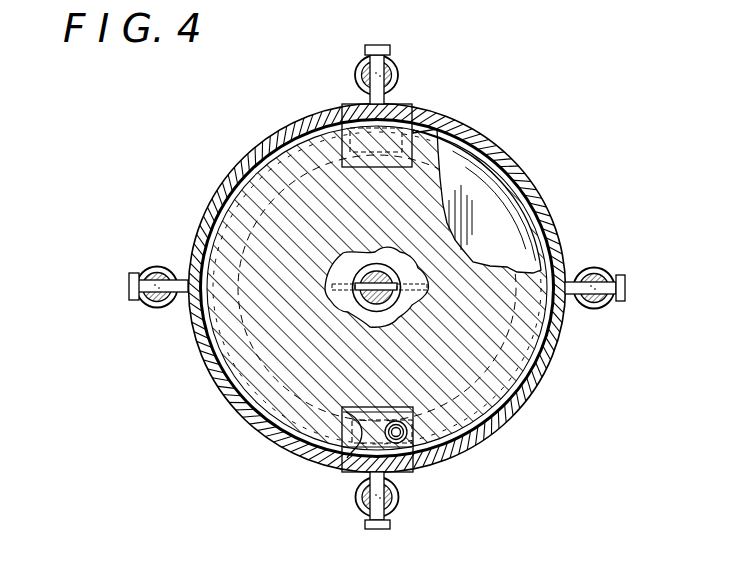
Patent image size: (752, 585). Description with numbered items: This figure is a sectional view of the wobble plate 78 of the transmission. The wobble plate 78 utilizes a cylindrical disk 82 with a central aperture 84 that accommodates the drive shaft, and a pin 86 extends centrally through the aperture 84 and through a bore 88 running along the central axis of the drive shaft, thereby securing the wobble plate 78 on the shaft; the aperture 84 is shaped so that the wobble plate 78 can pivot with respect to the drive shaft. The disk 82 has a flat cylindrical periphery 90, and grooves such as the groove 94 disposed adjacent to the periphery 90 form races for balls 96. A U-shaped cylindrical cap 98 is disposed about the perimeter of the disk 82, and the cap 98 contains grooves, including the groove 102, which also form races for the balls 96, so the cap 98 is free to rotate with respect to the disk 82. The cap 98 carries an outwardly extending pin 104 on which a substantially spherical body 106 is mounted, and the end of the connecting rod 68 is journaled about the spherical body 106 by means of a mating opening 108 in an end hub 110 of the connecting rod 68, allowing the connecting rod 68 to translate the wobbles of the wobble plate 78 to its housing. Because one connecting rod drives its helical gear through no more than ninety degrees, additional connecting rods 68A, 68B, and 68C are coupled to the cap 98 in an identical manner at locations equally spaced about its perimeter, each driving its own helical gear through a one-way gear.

The connecting rod 68 is at (405, 75).
The connecting rod 68A is at (155, 309).
The connecting rod 68B is at (405, 494).
The connecting rod 68C is at (608, 268).
The wobble plate 78 is at (440, 112).
The cylindrical disk 82 is at (542, 353).
The central aperture 84 is at (382, 264).
The pin 86 is at (356, 290).
The bore 88 is at (398, 294).
The flat cylindrical periphery 90 is at (350, 425).
The groove 94 is at (238, 412).
The balls 96 is at (397, 421).
The U-shaped cylindrical cap 98 is at (347, 464).
The groove 102 is at (418, 420).
The outwardly extending pin 104 is at (374, 45).
The spherical body 106 is at (360, 83).
The mating opening 108 is at (390, 60).
The end hub 110 is at (358, 68).